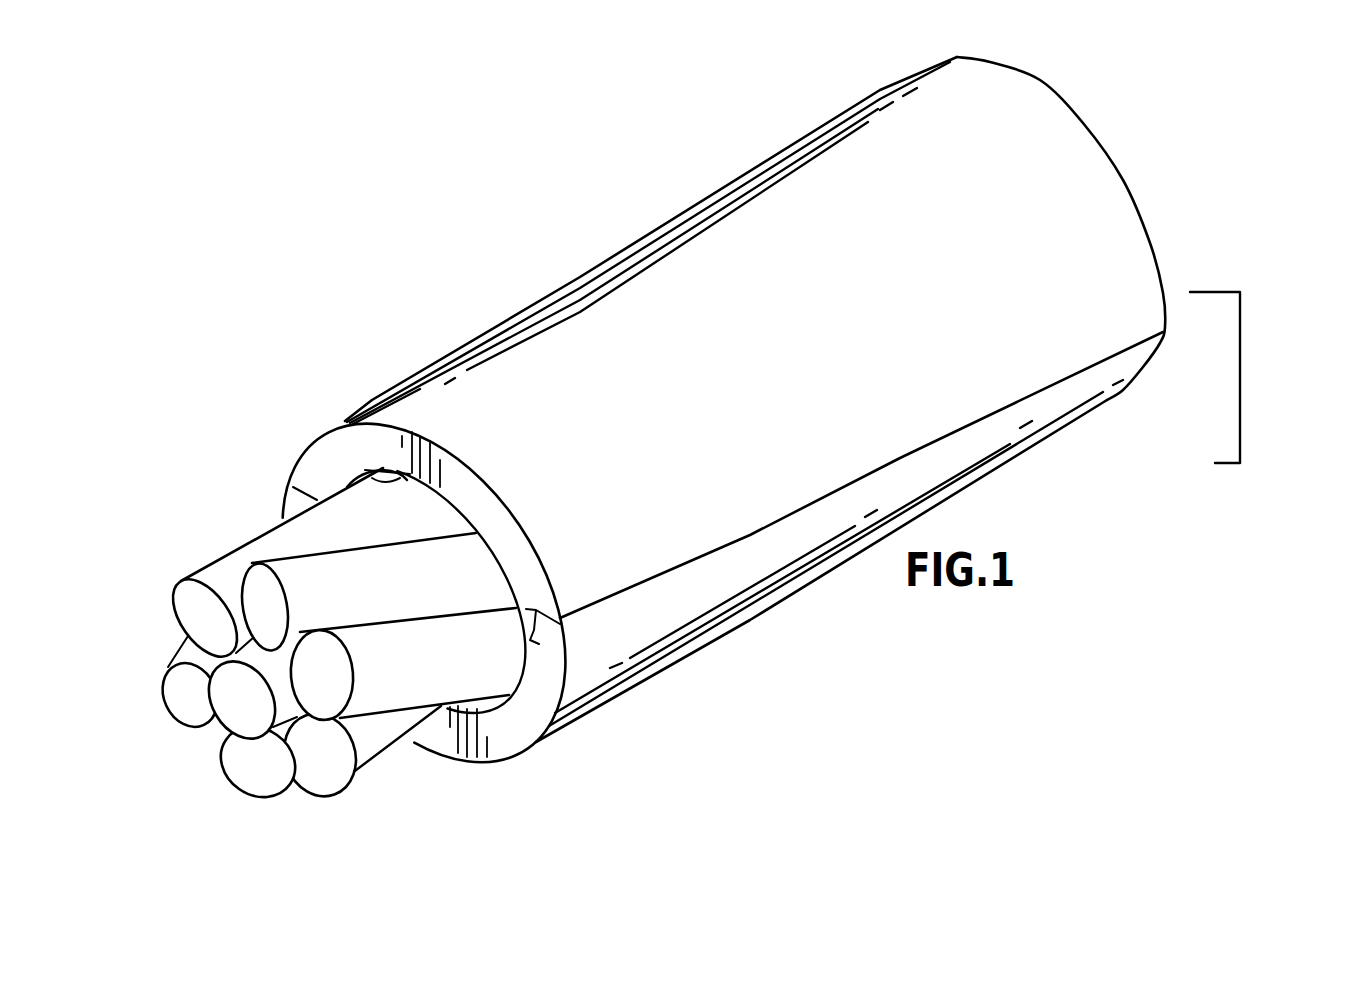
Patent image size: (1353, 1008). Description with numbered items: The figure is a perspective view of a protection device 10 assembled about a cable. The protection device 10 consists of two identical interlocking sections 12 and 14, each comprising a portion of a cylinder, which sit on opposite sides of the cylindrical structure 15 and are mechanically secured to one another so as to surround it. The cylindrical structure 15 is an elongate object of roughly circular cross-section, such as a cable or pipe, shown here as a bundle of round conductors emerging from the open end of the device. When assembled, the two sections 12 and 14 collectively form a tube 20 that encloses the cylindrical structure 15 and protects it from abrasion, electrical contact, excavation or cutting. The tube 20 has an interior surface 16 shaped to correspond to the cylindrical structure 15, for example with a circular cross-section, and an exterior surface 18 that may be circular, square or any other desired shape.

The protection device 10 is at (469, 235).
The interlocking section 12 is at (590, 663).
The interlocking section 14 is at (990, 189).
The cylindrical structure 15 is at (373, 750).
The interior surface 16 is at (367, 470).
The exterior surface 18 is at (758, 272).
The tube 20 is at (1255, 377).